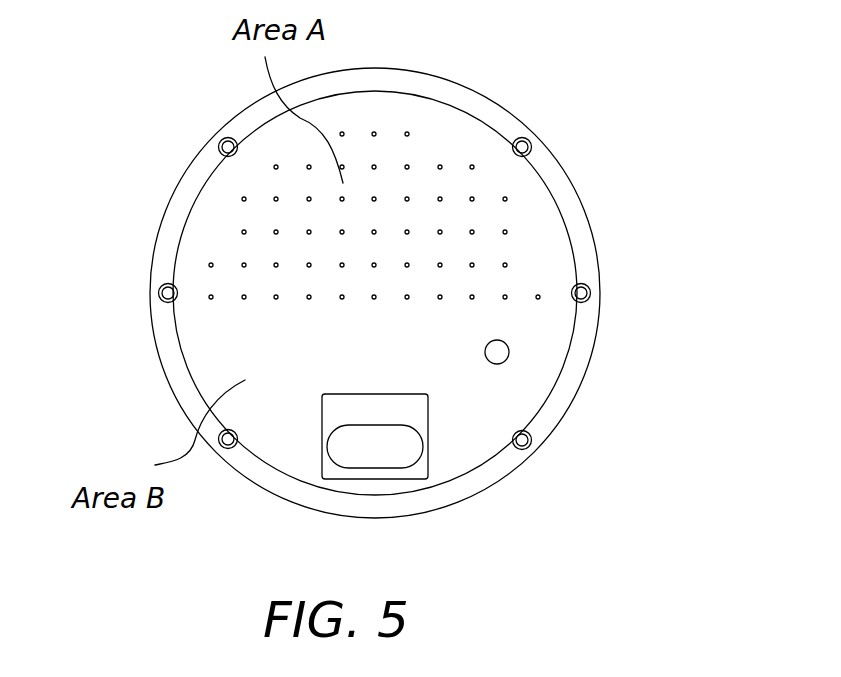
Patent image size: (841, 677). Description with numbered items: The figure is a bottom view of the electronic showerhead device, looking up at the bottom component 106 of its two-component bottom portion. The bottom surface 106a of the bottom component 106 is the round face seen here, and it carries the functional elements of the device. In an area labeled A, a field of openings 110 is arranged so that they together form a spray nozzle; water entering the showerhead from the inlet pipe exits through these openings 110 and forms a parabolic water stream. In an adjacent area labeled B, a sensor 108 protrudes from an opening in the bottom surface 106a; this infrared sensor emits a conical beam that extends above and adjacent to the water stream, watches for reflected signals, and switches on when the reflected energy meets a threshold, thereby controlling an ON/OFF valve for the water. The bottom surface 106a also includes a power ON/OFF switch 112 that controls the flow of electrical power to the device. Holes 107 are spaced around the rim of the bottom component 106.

The bottom component 106 is at (558, 238).
The bottom surface 106a is at (427, 127).
The fastener holes 107 is at (168, 288).
The sensor 108 is at (395, 443).
The openings 110 is at (538, 298).
The power ON/OFF switch 112 is at (509, 352).